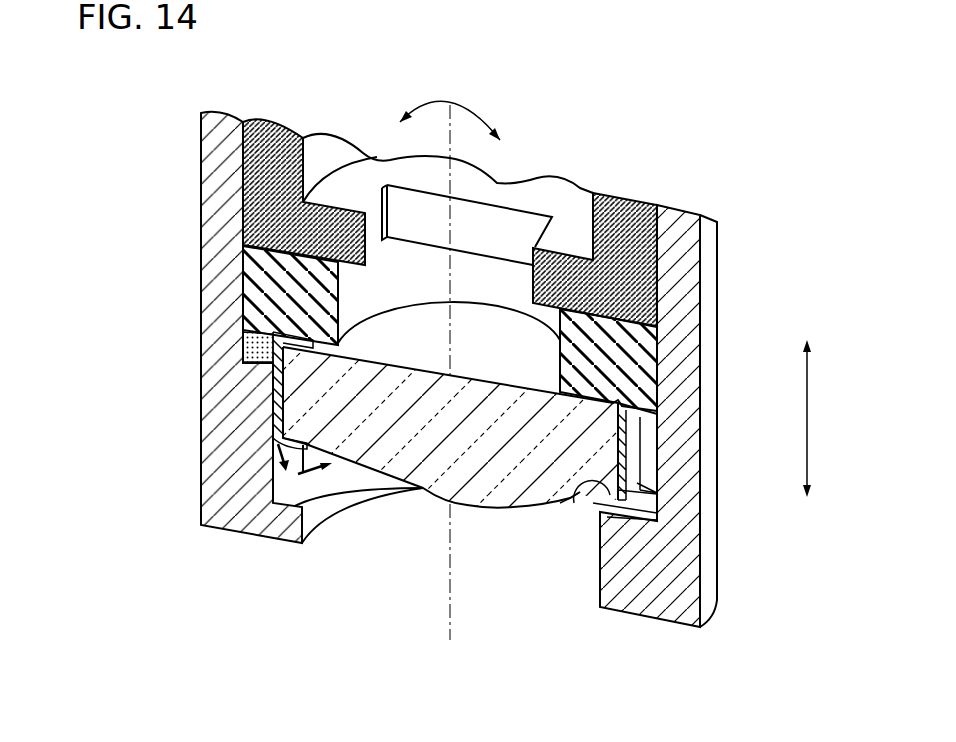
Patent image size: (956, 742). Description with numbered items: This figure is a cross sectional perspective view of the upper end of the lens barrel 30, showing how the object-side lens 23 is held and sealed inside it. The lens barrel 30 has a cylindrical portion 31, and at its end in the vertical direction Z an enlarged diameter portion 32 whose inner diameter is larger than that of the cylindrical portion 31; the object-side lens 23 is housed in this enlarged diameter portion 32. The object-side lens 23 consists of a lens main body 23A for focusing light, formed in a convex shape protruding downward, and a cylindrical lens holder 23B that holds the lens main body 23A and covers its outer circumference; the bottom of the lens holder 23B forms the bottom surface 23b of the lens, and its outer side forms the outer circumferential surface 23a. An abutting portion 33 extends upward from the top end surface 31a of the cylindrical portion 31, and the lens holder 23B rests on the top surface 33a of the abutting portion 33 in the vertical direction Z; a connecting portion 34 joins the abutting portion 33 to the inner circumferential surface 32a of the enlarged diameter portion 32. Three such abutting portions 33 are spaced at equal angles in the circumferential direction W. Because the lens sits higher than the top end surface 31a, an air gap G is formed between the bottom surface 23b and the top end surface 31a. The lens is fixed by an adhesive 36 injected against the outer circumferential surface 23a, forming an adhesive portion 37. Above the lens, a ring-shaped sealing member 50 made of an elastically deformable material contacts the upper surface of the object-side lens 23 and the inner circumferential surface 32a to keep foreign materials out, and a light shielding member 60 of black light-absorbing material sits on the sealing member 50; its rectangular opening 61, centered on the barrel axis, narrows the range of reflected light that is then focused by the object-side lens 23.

The lens barrel 30 is at (262, 100).
The enlarged diameter portion 32 is at (710, 314).
The inner circumferential surface 32a is at (250, 192).
The adhesive portion 37 is at (232, 316).
The adhesive 36 is at (252, 350).
The object-side lens 23 is at (142, 395).
The lens main body 23A is at (313, 392).
The lens holder 23B is at (278, 438).
The outer circumferential surface 23a is at (633, 432).
The bottom surface 23b is at (600, 530).
The cylindrical portion 31 is at (318, 523).
The top end surface 31a is at (305, 490).
The abutting portion 33 is at (637, 500).
The top surface 33a is at (572, 502).
The connecting portion 34 is at (640, 505).
The sealing member 50 is at (645, 358).
The light shielding member 60 is at (630, 215).
The opening 61 is at (530, 262).
The air gap G is at (300, 495).
The circumferential direction W is at (450, 112).
The vertical direction Z is at (816, 418).